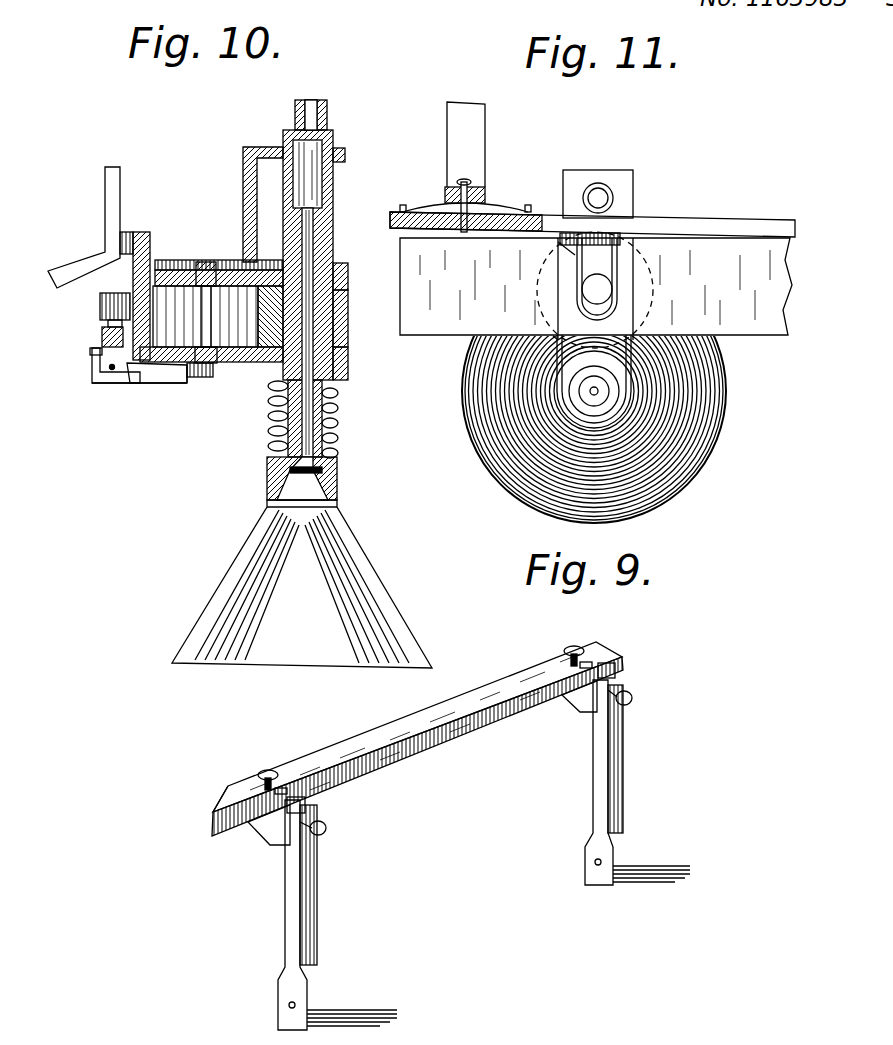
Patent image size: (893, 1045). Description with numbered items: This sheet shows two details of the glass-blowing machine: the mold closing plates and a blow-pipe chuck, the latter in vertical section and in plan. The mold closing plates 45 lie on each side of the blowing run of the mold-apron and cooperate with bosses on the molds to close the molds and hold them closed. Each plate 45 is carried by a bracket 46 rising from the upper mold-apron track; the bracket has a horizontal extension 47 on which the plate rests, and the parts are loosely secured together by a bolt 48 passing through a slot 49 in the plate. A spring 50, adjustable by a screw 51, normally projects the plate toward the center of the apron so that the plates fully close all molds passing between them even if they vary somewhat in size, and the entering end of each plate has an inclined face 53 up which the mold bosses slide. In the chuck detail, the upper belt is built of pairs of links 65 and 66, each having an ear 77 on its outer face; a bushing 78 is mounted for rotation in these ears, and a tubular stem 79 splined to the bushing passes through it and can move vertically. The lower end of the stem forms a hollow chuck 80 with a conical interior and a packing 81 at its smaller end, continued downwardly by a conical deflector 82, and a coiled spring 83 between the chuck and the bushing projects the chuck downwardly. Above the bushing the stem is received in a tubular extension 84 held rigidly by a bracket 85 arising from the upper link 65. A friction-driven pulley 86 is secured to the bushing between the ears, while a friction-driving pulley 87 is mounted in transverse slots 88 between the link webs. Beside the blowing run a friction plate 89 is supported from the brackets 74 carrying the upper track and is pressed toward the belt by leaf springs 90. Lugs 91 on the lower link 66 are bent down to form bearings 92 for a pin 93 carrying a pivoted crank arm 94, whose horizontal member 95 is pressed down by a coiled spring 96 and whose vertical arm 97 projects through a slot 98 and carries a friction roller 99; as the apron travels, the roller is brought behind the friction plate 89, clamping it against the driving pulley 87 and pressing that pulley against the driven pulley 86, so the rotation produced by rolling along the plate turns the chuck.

In FIG. 9, the coöperating plate 45 is at (445, 744).
In FIG. 9, the bracket 46 is at (615, 798).
In FIG. 9, the horizontal extension 47 is at (585, 705).
In FIG. 9, the bolt 48 is at (580, 648).
In FIG. 9, the slot 49 is at (578, 666).
In FIG. 9, the spring 50 is at (616, 670).
In FIG. 9, the screw 51 is at (631, 702).
In FIG. 9, the inclined face 53 is at (214, 800).
In FIG. 10, the link 65 is at (246, 262).
In FIG. 11, the link 65 is at (596, 286).
In FIG. 10, the link 66 is at (240, 362).
In FIG. 10, the bracket 74 is at (106, 198).
In FIG. 11, the bracket 74 is at (470, 150).
In FIG. 10, the ear 77 is at (340, 287).
In FIG. 10, the bushing 78 is at (345, 263).
In FIG. 11, the bushing 78 is at (633, 378).
In FIG. 10, the tubular stem 79 is at (312, 320).
In FIG. 10, the hollow chuck 80 is at (328, 472).
In FIG. 10, the packing 81 is at (290, 470).
In FIG. 10, the conical deflector 82 is at (302, 584).
In FIG. 11, the conical deflector 82 is at (566, 372).
In FIG. 10, the coiled spring 83 is at (338, 414).
In FIG. 10, the tubular extension 84 is at (322, 200).
In FIG. 11, the tubular extension 84 is at (578, 392).
In FIG. 10, the bracket 85 is at (243, 176).
In FIG. 11, the bracket 85 is at (633, 326).
In FIG. 10, the friction-driven pulley 86 is at (348, 335).
In FIG. 11, the friction-driven pulley 86 is at (553, 340).
In FIG. 10, the friction-driving pulley 87 is at (205, 362).
In FIG. 11, the friction-driving pulley 87 is at (558, 243).
In FIG. 10, the slot 88 is at (210, 377).
In FIG. 10, the friction plate 89 is at (141, 232).
In FIG. 11, the friction plate 89 is at (688, 222).
In FIG. 10, the leaf spring 90 is at (127, 232).
In FIG. 11, the leaf spring 90 is at (486, 203).
In FIG. 10, the lug 91 is at (92, 351).
In FIG. 11, the lug 91 is at (633, 203).
In FIG. 10, the bearing 92 is at (96, 382).
In FIG. 10, the pin 93 is at (112, 370).
In FIG. 10, the crank arm 94 is at (142, 372).
In FIG. 10, the horizontal member 95 is at (170, 381).
In FIG. 10, the coiled spring 96 is at (185, 382).
In FIG. 10, the vertical arm 97 is at (105, 337).
In FIG. 11, the vertical arm 97 is at (605, 195).
In FIG. 10, the slot 98 is at (97, 365).
In FIG. 10, the friction roller 99 is at (105, 300).
In FIG. 11, the friction roller 99 is at (597, 183).